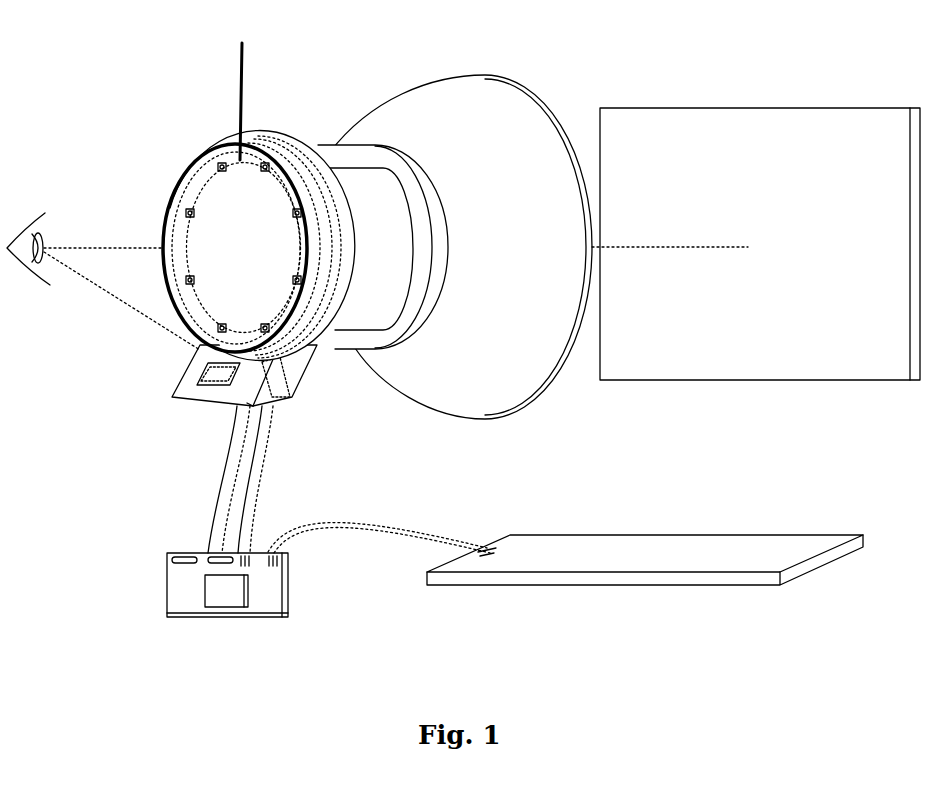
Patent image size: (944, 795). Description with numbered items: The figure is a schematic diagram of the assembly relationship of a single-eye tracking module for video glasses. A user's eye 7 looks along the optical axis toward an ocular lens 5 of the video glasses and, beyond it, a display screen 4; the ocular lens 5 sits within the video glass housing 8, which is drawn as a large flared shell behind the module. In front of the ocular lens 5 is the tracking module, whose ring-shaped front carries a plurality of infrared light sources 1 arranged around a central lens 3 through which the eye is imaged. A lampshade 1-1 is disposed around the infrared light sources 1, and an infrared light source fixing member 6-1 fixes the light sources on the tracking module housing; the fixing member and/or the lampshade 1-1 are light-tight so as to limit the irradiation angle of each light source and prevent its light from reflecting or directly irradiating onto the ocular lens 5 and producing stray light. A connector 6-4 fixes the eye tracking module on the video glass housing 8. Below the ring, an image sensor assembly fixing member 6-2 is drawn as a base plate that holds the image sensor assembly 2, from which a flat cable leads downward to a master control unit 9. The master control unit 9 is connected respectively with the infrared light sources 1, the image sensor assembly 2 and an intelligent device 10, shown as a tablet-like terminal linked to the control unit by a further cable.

The infrared light source 1 is at (224, 165).
The lampshade 1-1 is at (214, 152).
The image sensor assembly 2 is at (275, 398).
The lens 3 is at (207, 240).
The display screen 4 is at (727, 130).
The ocular lens 5 is at (355, 182).
The infrared light source fixing member 6-1 is at (247, 87).
The image sensor assembly fixing member 6-2 is at (293, 378).
The connector 6-4 is at (303, 140).
The eye 7 is at (21, 225).
The video glass housing 8 is at (413, 125).
The master control unit 9 is at (185, 590).
The intelligent device 10 is at (595, 567).